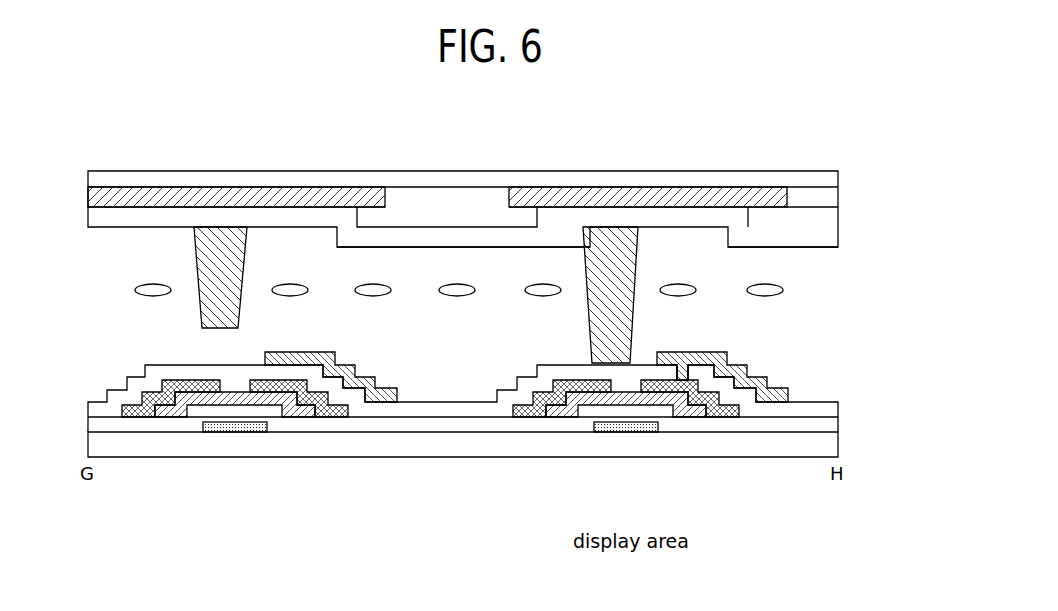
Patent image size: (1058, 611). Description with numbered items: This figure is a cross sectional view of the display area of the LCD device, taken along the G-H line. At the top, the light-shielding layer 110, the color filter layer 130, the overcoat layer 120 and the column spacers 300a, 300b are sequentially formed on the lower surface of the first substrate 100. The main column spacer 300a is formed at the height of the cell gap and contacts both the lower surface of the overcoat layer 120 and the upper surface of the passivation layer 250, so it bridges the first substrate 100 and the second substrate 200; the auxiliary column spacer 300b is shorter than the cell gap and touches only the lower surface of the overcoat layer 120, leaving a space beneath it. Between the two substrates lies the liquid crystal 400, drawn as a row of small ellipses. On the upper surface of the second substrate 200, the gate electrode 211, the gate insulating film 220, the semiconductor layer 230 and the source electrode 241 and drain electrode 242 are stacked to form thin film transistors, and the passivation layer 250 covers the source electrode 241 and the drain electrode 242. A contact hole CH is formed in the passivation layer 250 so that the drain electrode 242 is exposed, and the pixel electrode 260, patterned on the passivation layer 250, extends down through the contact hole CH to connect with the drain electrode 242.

The first substrate 100 is at (838, 178).
The light-shielding layer 110 is at (670, 186).
The overcoat layer 120 is at (838, 238).
The color filter layer 130 is at (455, 207).
The second substrate 200 is at (838, 449).
The gate electrode 211 is at (235, 424).
The gate insulating film 220 is at (838, 426).
The semiconductor layer 230 is at (182, 418).
The source electrode 241 is at (142, 420).
The drain electrode 242 is at (327, 418).
The passivation layer 250 is at (838, 406).
The pixel electrode 260 is at (362, 380).
The main column spacer 300a is at (632, 258).
The auxiliary column spacer 300b is at (207, 258).
The liquid crystal layer 400 is at (786, 288).
The contact hole CH is at (685, 362).